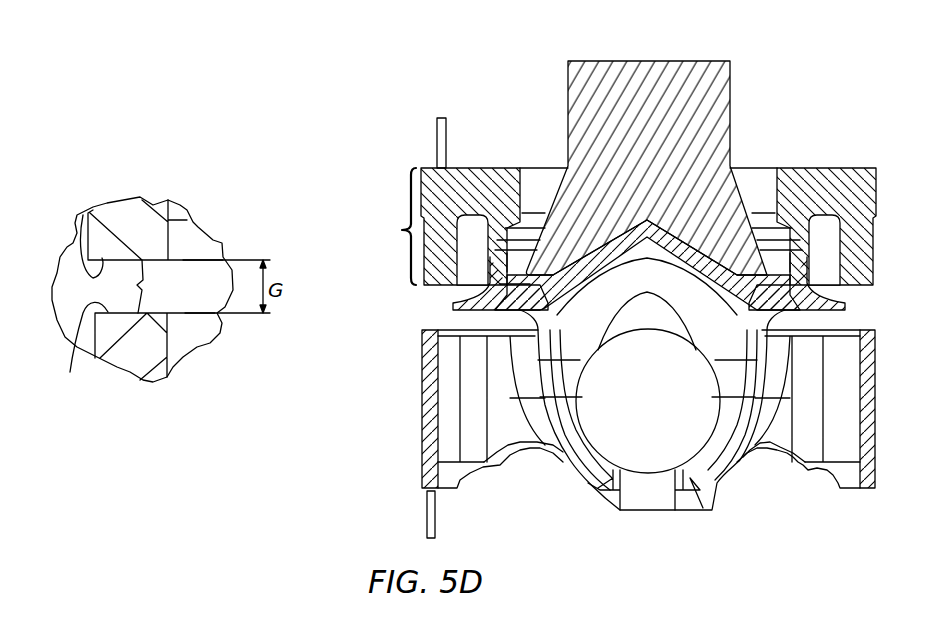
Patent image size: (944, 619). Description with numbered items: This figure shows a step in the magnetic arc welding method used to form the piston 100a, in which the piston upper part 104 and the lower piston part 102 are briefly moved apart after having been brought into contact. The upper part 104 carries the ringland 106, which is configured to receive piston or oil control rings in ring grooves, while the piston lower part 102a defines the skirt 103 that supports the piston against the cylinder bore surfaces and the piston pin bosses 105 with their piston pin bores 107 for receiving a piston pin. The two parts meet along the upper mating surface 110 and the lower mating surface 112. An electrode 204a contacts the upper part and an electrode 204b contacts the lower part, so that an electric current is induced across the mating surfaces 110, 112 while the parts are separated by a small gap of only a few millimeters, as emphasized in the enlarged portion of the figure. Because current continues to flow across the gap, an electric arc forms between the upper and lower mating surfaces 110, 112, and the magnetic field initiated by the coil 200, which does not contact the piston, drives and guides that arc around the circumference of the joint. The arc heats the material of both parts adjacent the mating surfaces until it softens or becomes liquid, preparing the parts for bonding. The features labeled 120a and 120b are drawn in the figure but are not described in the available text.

The piston 100a is at (415, 158).
The lower piston part 102 is at (123, 358).
The piston lower part 102a is at (423, 482).
The skirt 103 is at (877, 455).
The piston upper part 104 is at (127, 217).
The piston pin boss 105 is at (647, 493).
The ringland 106 is at (387, 226).
The piston pin bore 107 is at (630, 472).
The upper mating surface 110 is at (82, 211).
The lower mating surface 112 is at (70, 372).
The first piston wing 120a is at (547, 200).
The second piston wing 120b is at (770, 220).
The coil 200 is at (657, 88).
The electrode 204a is at (445, 137).
The electrode 204b is at (427, 516).